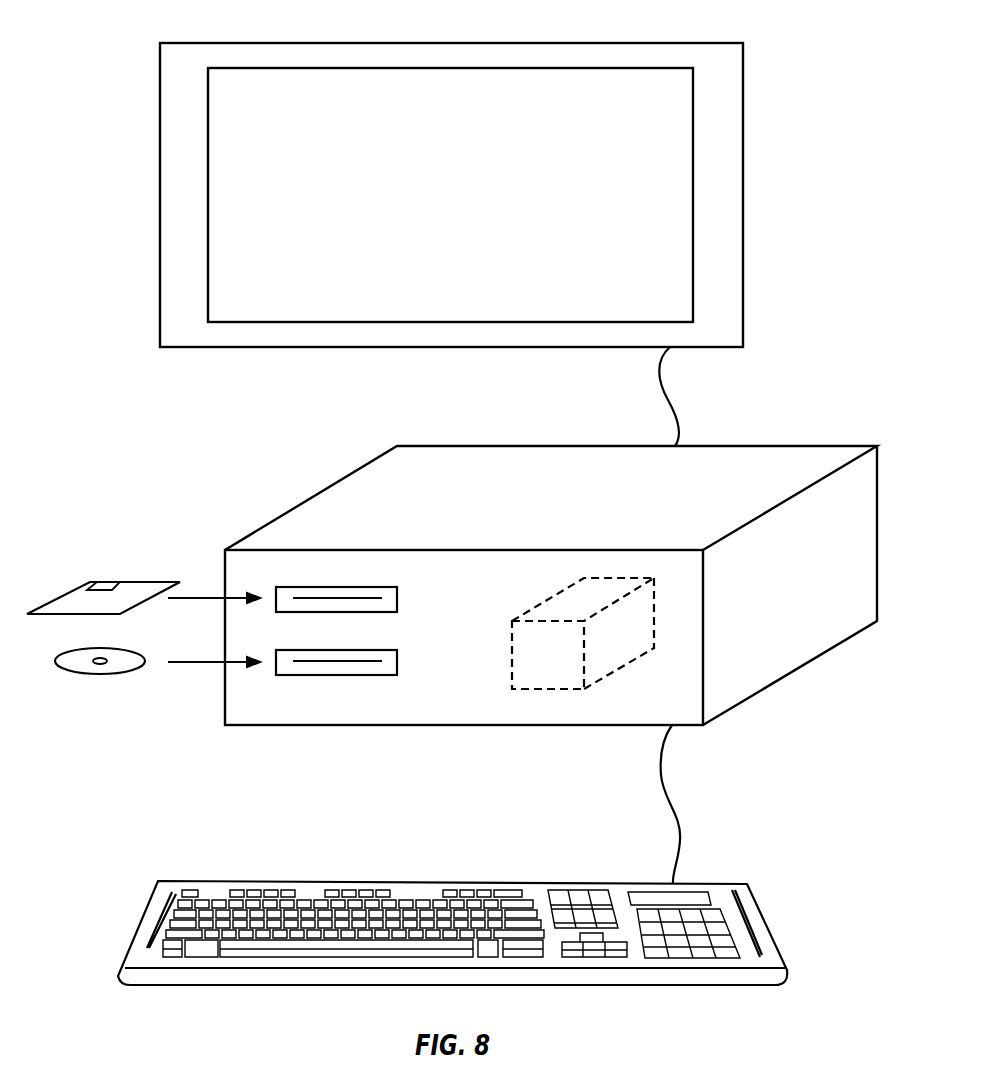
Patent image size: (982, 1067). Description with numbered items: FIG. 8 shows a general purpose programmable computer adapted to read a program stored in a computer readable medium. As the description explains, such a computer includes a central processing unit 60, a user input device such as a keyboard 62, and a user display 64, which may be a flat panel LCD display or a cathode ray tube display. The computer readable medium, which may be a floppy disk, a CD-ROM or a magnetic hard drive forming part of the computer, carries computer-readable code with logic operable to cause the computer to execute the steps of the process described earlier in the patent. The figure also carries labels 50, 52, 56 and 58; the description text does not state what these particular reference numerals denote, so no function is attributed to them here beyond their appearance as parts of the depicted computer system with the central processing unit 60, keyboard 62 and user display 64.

The computer 50 is at (800, 446).
The display monitor 52 is at (675, 43).
The disk drive 56 is at (365, 650).
The disk drive 58 is at (365, 587).
The central processing unit 60 is at (512, 633).
The keyboard 62 is at (135, 651).
The user display 64 is at (135, 582).